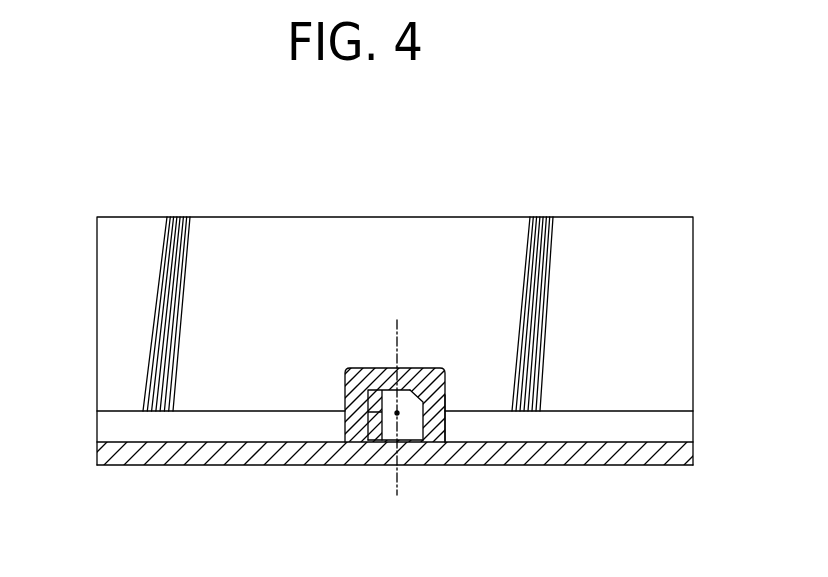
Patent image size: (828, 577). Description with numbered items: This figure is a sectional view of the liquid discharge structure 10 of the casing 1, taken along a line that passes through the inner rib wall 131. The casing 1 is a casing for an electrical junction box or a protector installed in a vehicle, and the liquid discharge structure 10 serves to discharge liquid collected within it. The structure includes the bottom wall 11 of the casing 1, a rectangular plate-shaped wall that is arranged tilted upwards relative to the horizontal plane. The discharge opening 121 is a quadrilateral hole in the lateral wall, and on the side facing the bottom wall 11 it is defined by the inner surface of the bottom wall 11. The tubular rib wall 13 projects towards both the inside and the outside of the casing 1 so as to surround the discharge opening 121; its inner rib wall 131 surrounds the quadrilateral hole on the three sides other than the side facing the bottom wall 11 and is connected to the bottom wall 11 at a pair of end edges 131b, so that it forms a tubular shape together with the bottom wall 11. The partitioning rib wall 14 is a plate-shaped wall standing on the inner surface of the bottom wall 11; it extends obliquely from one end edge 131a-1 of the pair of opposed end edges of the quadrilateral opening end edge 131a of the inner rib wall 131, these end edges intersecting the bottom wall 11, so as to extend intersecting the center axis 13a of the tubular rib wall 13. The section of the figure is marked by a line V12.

The casing 1 is at (406, 198).
The liquid discharge structure 10 is at (132, 473).
The bottom wall 11 is at (645, 464).
The tubular rib wall 13 is at (375, 368).
The inner rib wall 131 is at (461, 431).
The opening end edge 131a is at (449, 426).
The one end edge 131a-1 is at (560, 413).
The end edges 131b is at (313, 467).
The center axis 13a is at (390, 441).
The partitioning rib wall 14 is at (345, 398).
The discharge opening 121 is at (445, 387).
The virtual line V12 is at (447, 328).